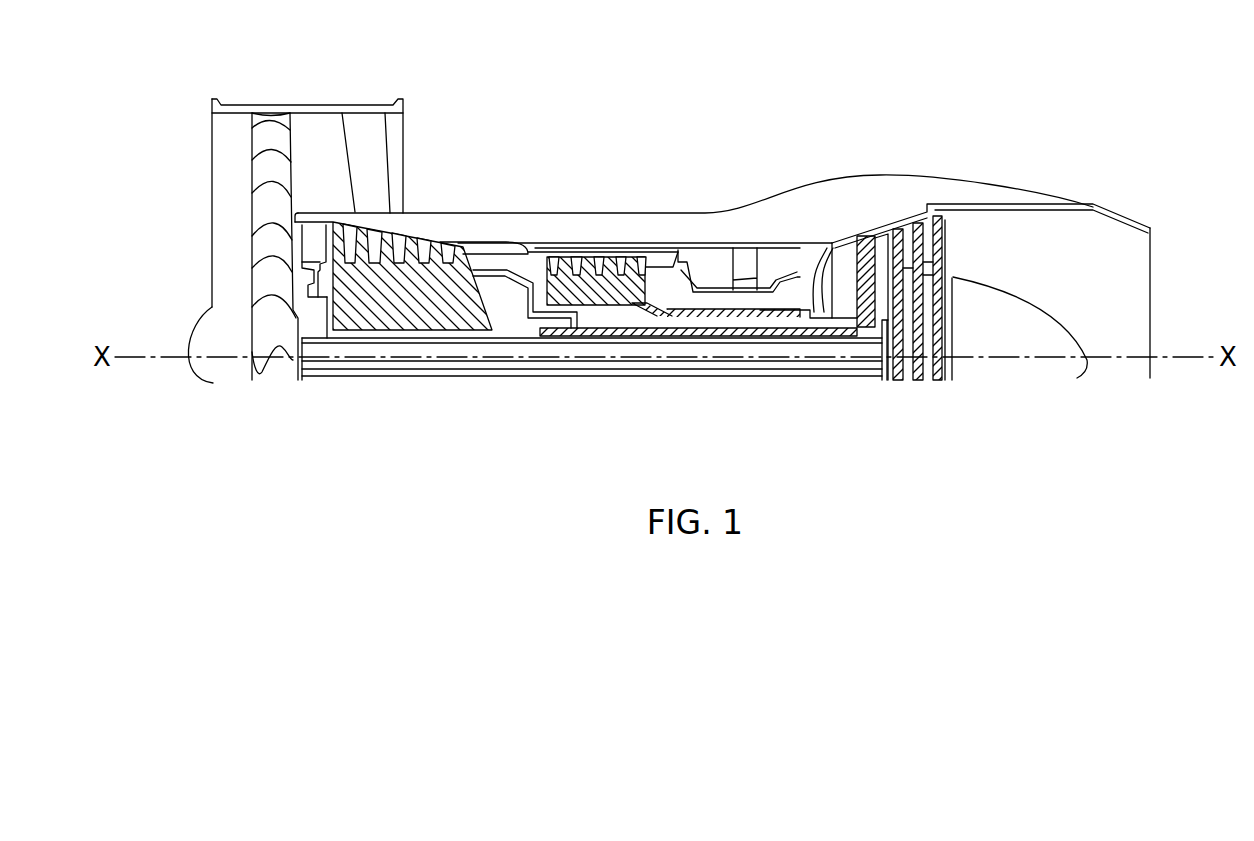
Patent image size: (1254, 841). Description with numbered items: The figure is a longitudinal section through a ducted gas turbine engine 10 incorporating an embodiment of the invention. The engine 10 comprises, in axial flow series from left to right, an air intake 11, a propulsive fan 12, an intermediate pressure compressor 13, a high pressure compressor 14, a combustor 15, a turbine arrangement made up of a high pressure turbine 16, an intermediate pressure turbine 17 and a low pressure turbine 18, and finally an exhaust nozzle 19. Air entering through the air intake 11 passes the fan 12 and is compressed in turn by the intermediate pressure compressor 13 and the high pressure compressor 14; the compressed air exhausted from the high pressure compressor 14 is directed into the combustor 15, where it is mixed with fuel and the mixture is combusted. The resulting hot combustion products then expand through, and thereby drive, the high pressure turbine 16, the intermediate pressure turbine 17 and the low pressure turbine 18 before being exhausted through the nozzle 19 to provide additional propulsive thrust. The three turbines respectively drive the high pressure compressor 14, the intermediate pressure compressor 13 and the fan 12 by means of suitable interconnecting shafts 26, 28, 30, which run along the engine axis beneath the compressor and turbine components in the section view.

The gas turbine engine 10 is at (590, 148).
The air intake 11 is at (191, 228).
The propulsive fan 12 is at (275, 138).
The intermediate pressure compressor 13 is at (408, 275).
The high pressure compressor 14 is at (598, 256).
The combustor 15 is at (747, 243).
The high pressure turbine 16 is at (826, 243).
The intermediate pressure turbine 17 is at (861, 234).
The low pressure turbine 18 is at (928, 237).
The exhaust nozzle 19 is at (1137, 303).
The interconnecting shaft 26 is at (745, 318).
The interconnecting shaft 28 is at (548, 336).
The interconnecting shaft 30 is at (440, 377).